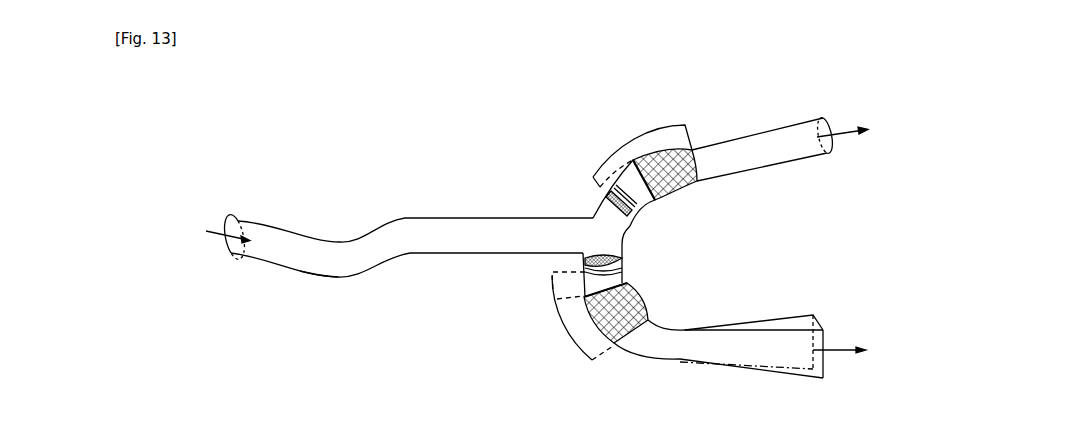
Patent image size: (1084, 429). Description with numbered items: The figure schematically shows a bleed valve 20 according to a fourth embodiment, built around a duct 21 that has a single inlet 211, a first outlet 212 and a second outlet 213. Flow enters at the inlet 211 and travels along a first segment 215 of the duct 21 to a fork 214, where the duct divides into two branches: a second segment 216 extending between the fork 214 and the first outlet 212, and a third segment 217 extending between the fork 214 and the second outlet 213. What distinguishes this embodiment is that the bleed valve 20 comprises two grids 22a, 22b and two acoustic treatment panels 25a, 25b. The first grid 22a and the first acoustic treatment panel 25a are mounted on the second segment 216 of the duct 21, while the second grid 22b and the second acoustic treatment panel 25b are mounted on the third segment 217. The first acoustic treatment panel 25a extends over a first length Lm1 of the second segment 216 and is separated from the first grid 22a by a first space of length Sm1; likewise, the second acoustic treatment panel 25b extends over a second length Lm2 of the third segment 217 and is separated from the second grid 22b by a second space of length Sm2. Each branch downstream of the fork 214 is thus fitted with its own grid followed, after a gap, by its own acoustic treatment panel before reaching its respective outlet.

The bleed valve 20 is at (449, 268).
The duct 21 is at (370, 240).
The inlet 211 is at (228, 246).
The first outlet 212 is at (828, 118).
The second outlet 213 is at (826, 366).
The fork 214 is at (591, 213).
The first segment 215 is at (364, 277).
The second segment 216 is at (733, 133).
The third segment 217 is at (736, 326).
The first grid 22a is at (631, 225).
The second grid 22b is at (622, 262).
The first acoustic treatment panel 25a is at (680, 190).
The second acoustic treatment panel 25b is at (638, 306).
The first length Lm1 is at (648, 128).
The second length Lm2 is at (566, 332).
The first space length Sm1 is at (608, 156).
The second space length Sm2 is at (550, 278).